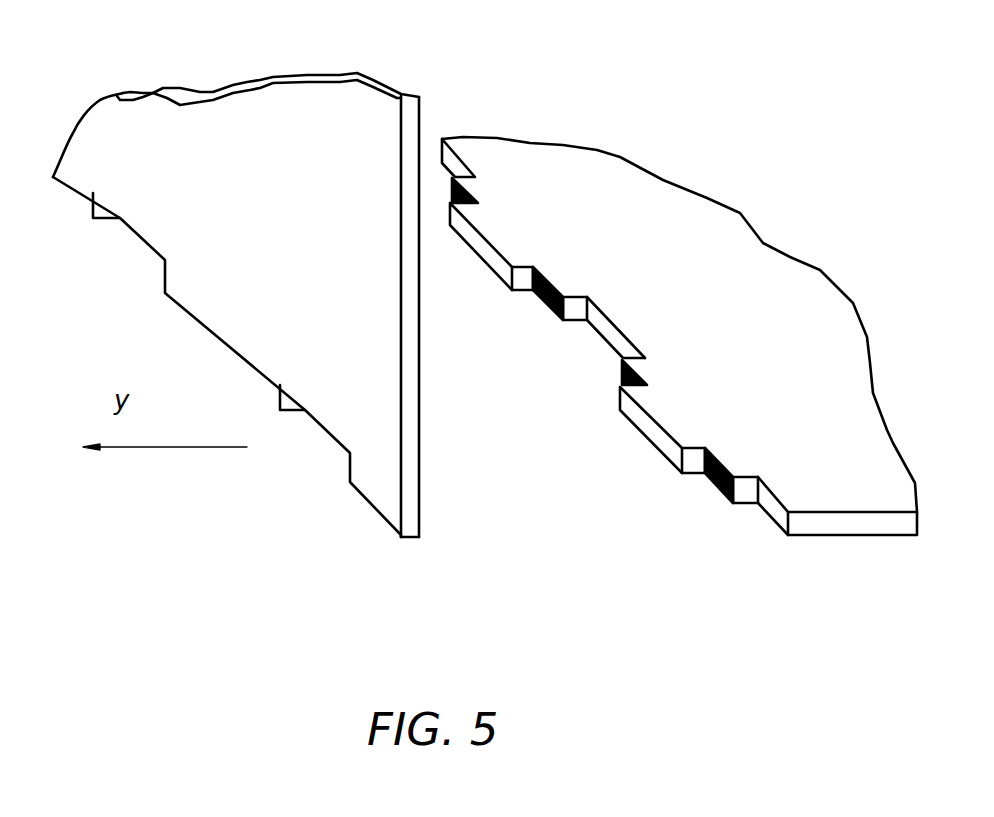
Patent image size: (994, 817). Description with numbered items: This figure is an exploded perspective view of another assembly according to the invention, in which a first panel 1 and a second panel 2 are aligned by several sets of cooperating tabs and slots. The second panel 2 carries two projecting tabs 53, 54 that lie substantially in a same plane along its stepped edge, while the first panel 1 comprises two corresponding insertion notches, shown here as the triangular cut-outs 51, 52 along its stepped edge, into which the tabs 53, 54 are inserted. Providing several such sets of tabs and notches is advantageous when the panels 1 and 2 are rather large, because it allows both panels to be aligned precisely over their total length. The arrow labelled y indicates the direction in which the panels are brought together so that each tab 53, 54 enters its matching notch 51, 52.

The first panel 1 is at (236, 272).
The second panel 2 is at (679, 336).
The triangular notch of first member 51 is at (318, 438).
The triangular notch of first member 52 is at (132, 247).
The tab 53 is at (645, 427).
The tab 54 is at (477, 245).